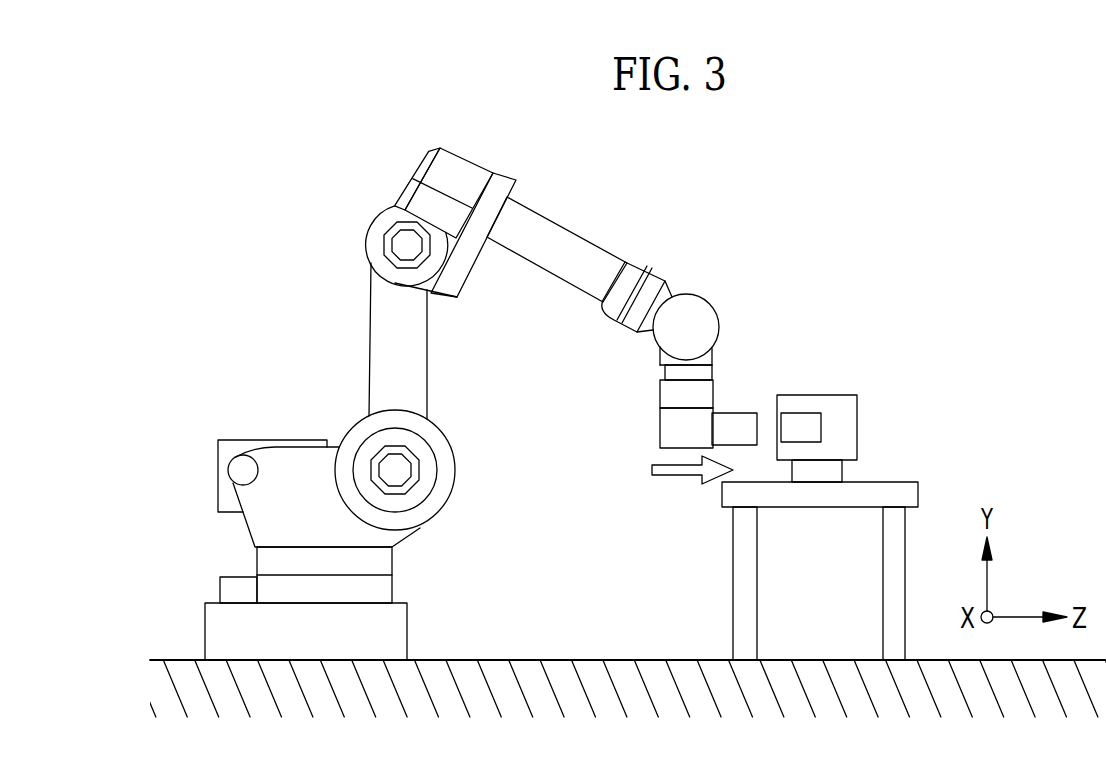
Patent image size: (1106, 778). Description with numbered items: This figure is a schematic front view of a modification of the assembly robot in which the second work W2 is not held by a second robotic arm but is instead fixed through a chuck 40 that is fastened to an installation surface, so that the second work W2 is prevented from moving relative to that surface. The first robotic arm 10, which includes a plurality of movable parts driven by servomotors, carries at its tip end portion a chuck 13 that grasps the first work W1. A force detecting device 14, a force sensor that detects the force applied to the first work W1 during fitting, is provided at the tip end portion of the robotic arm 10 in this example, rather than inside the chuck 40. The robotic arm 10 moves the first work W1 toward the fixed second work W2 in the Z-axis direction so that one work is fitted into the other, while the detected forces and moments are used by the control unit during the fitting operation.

The first robotic arm 10 is at (329, 254).
The chuck 13 is at (660, 397).
The force detecting device 14 is at (665, 369).
The first work W1 is at (660, 428).
The second work W2 is at (810, 395).
The chuck 40 is at (843, 468).